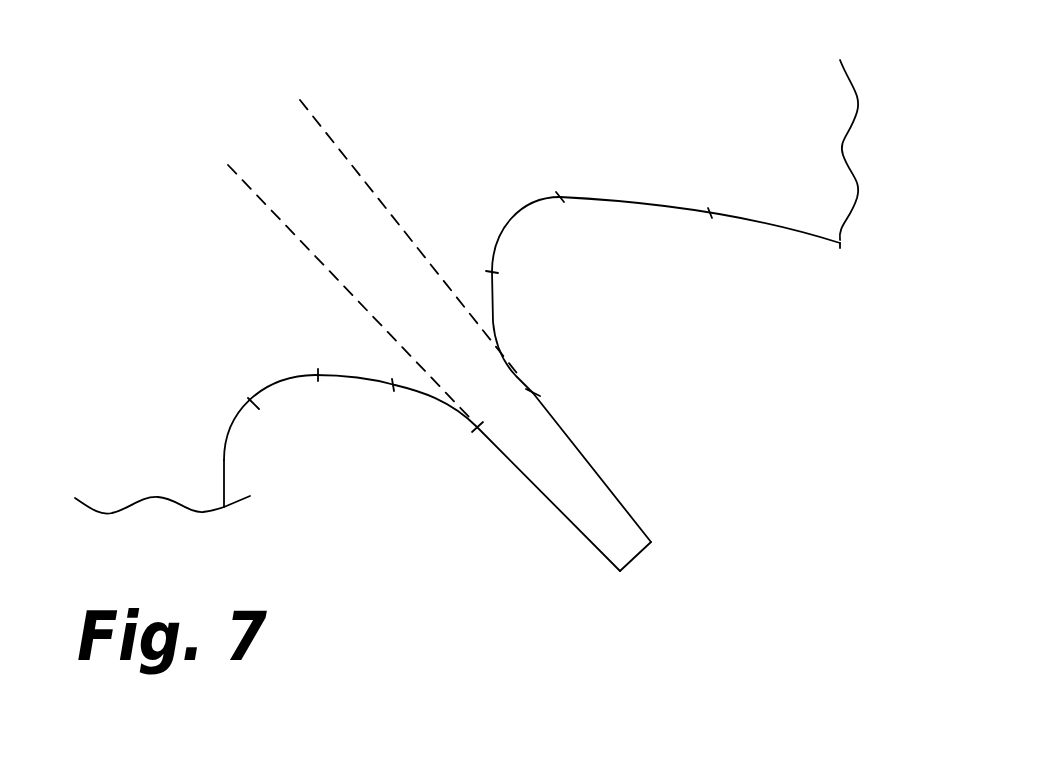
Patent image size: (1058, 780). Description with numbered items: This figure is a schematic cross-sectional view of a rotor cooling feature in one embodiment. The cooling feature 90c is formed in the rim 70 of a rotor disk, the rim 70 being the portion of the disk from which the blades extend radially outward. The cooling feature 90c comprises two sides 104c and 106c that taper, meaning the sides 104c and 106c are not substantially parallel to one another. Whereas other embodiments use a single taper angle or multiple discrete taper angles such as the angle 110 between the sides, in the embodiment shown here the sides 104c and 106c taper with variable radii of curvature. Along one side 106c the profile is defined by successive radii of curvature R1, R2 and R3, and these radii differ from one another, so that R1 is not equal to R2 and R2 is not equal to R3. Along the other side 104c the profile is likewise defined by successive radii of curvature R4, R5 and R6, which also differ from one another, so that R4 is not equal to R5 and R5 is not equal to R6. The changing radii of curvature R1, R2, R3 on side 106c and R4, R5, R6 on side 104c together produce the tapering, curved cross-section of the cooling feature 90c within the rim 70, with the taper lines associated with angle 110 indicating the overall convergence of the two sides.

The angle 110 is at (177, 287).
The radius of curvature R1 is at (500, 327).
The radius of curvature R2 is at (510, 223).
The radius of curvature R3 is at (630, 202).
The radius of curvature R4 is at (440, 400).
The radius of curvature R5 is at (350, 380).
The radius of curvature R6 is at (280, 388).
The rim 70 is at (800, 237).
The side 106c is at (590, 460).
The side 104c is at (580, 530).
The cooling feature 90c is at (635, 517).